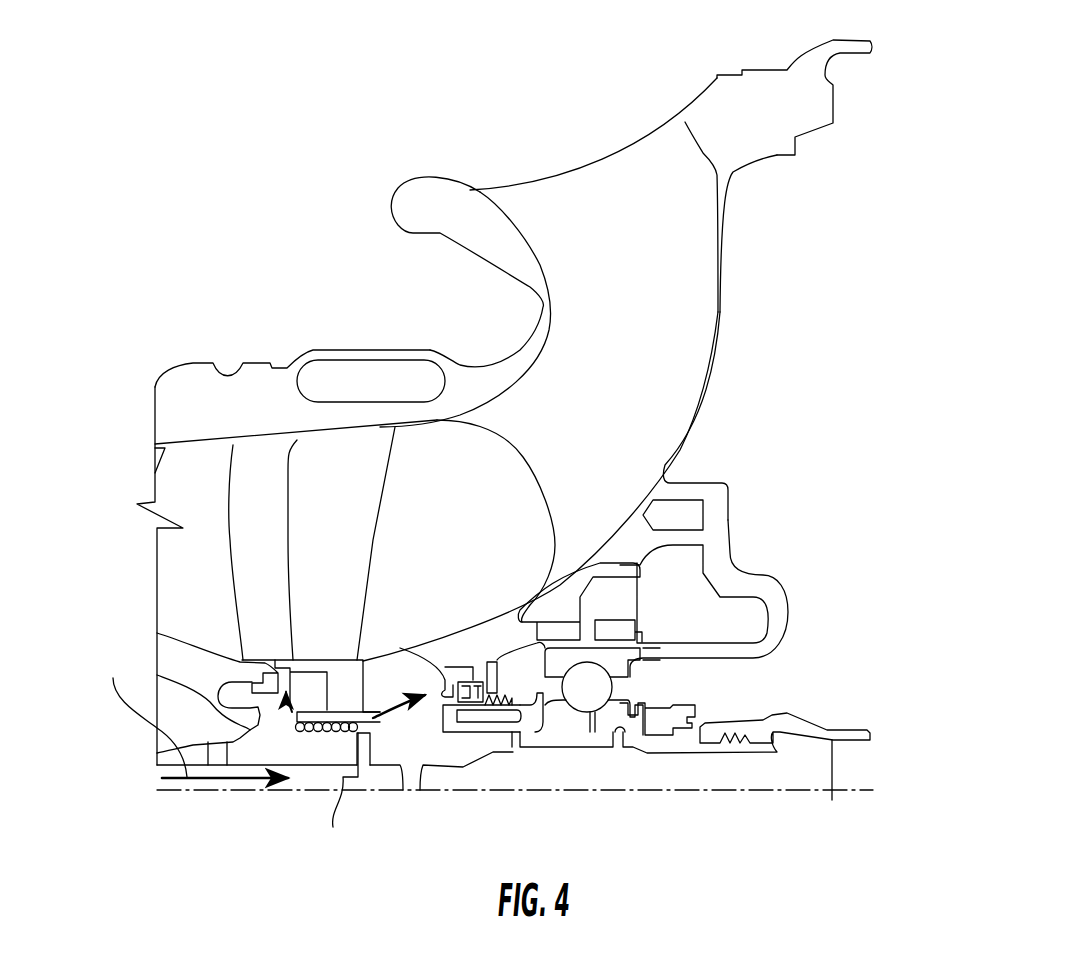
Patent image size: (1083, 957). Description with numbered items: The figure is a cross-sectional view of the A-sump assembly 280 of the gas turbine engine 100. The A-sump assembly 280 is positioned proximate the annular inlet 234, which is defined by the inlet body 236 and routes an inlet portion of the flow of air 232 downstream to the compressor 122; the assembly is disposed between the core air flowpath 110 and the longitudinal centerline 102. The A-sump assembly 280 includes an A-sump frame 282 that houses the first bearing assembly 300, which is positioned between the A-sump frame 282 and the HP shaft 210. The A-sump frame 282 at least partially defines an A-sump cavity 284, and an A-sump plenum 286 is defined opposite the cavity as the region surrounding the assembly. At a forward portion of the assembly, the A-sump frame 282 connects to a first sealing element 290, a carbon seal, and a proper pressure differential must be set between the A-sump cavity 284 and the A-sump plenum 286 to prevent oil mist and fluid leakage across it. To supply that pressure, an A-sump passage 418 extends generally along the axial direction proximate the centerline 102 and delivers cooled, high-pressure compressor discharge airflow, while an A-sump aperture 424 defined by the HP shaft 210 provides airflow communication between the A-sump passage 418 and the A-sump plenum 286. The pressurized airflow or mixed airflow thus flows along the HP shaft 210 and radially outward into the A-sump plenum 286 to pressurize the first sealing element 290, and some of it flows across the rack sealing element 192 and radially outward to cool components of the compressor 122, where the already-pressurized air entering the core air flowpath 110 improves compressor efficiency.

The gas turbine engine 100 is at (472, 438).
The longitudinal centerline 102 is at (760, 792).
The core air flowpath 110 is at (438, 493).
The compressor 122 is at (230, 357).
The rack sealing element 192 is at (322, 717).
The HP shaft 210 is at (303, 755).
The air 232 is at (627, 273).
The annular inlet 234 is at (638, 128).
The inlet body 236 is at (732, 127).
The A-sump assembly 280 is at (807, 590).
The A-sump frame 282 is at (447, 657).
The A-sump cavity 284 is at (532, 670).
The A-sump plenum 286 is at (398, 688).
The first sealing element 290 is at (477, 682).
The first bearing assembly 300 is at (590, 718).
The A-sump passage 418 is at (243, 785).
The A-sump aperture 424 is at (374, 753).